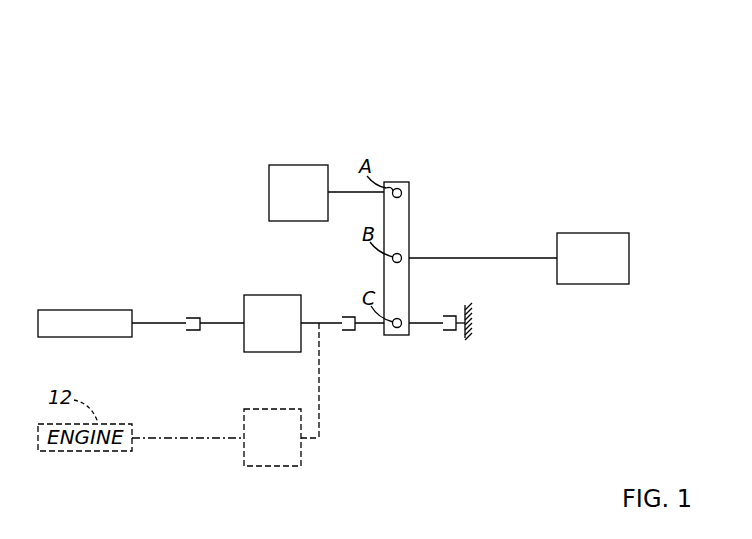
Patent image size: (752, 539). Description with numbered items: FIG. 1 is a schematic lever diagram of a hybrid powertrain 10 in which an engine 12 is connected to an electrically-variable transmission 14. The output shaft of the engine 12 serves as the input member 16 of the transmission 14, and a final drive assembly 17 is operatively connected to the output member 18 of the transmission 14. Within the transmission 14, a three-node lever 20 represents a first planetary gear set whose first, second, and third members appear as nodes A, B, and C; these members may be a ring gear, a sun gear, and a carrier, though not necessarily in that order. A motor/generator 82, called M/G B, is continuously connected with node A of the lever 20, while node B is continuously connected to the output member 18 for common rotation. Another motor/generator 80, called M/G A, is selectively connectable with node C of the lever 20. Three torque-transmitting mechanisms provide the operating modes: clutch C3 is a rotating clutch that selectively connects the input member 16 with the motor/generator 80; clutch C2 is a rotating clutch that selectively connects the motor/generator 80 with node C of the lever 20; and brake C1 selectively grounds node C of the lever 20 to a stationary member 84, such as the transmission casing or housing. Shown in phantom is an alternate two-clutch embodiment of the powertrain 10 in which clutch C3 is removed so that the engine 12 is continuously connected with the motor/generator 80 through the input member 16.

The hybrid powertrain 10 is at (403, 58).
The engine 12 is at (98, 309).
The electrically-variable transmission 14 is at (483, 140).
The input member 16 is at (152, 322).
The final drive assembly 17 is at (589, 232).
The output member 18 is at (455, 257).
The three-node lever 20 is at (395, 181).
The motor/generator 80 is at (254, 294).
The motor/generator 82 is at (278, 164).
The stationary member 84 is at (470, 309).
The brake C1 is at (441, 326).
The clutch C2 is at (336, 332).
The clutch C3 is at (186, 325).